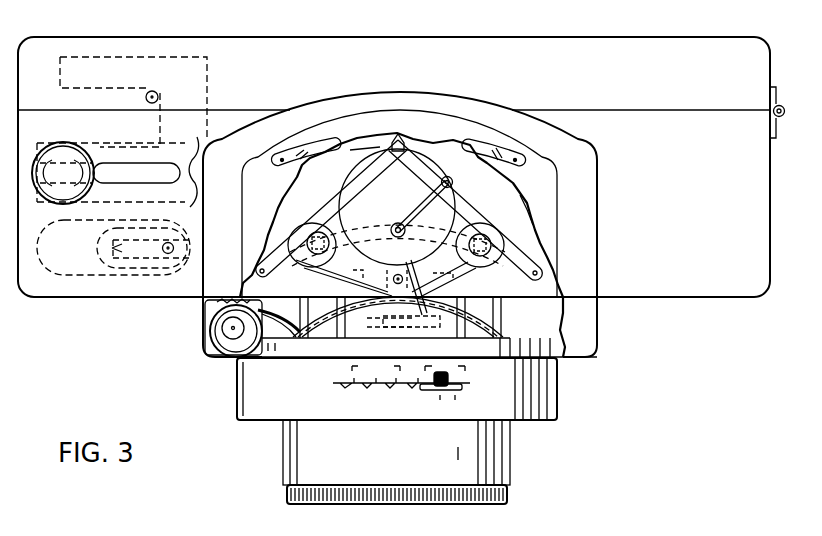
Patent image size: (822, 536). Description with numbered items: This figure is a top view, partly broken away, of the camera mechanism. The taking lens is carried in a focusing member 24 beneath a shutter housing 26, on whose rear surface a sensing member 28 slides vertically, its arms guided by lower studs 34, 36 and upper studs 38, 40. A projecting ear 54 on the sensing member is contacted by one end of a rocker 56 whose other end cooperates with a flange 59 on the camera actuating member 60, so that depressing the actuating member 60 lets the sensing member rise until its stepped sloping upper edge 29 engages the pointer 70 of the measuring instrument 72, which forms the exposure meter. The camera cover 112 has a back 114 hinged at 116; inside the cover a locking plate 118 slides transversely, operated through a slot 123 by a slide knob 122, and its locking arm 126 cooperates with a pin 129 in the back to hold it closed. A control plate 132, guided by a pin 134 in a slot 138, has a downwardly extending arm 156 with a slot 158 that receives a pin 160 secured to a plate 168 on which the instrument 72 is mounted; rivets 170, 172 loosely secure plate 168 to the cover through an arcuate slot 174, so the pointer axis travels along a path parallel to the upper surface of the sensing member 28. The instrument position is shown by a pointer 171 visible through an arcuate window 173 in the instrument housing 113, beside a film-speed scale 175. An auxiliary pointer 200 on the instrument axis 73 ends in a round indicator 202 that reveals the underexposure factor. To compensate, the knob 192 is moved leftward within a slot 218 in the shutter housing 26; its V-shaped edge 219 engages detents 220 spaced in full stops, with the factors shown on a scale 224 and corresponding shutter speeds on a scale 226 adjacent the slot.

The focusing member 24 is at (509, 495).
The shutter housing 26 is at (558, 390).
The sensing member 28 is at (340, 330).
The sloping upper edge 29 is at (505, 334).
The lower stud 34 is at (330, 280).
The lower stud 36 is at (456, 300).
The upper stud 38 is at (290, 272).
The upper stud 40 is at (534, 278).
The projecting ear 54 is at (420, 322).
The rocker 56 is at (205, 313).
The flange 59 is at (209, 345).
The camera actuating member 60 is at (210, 332).
The pointer 70 is at (430, 282).
The measuring instrument 72 is at (365, 205).
The instrument axis 73 is at (390, 229).
The camera cover 112 is at (641, 180).
The instrument housing 113 is at (597, 210).
The camera back 114 is at (627, 87).
The hinge 116 is at (770, 140).
The locking plate 118 is at (132, 203).
The slide knob 122 is at (58, 146).
The slot 123 is at (115, 163).
The locking arm 126 is at (118, 57).
The pin 129 is at (157, 91).
The control plate 132 is at (118, 277).
The pin 134 is at (164, 255).
The slot 138 is at (112, 251).
The downwardly extending arm 156 is at (352, 276).
The slot 158 is at (395, 273).
The pin 160 is at (415, 265).
The plate 168 is at (453, 184).
The rivet 170 is at (316, 232).
The pointer 171 is at (368, 152).
The rivet 172 is at (488, 224).
The arcuate window 173 is at (298, 156).
The arcuate slot 174 is at (256, 262).
The film-speed scale 175 is at (350, 114).
The knob 192 is at (450, 376).
The auxiliary pointer 200 is at (416, 210).
The round indicator 202 is at (441, 178).
The slot 218 is at (337, 420).
The V-shaped edge 219 is at (463, 388).
The detents 220 is at (392, 402).
The scale 224 is at (412, 366).
The scale 226 is at (434, 420).